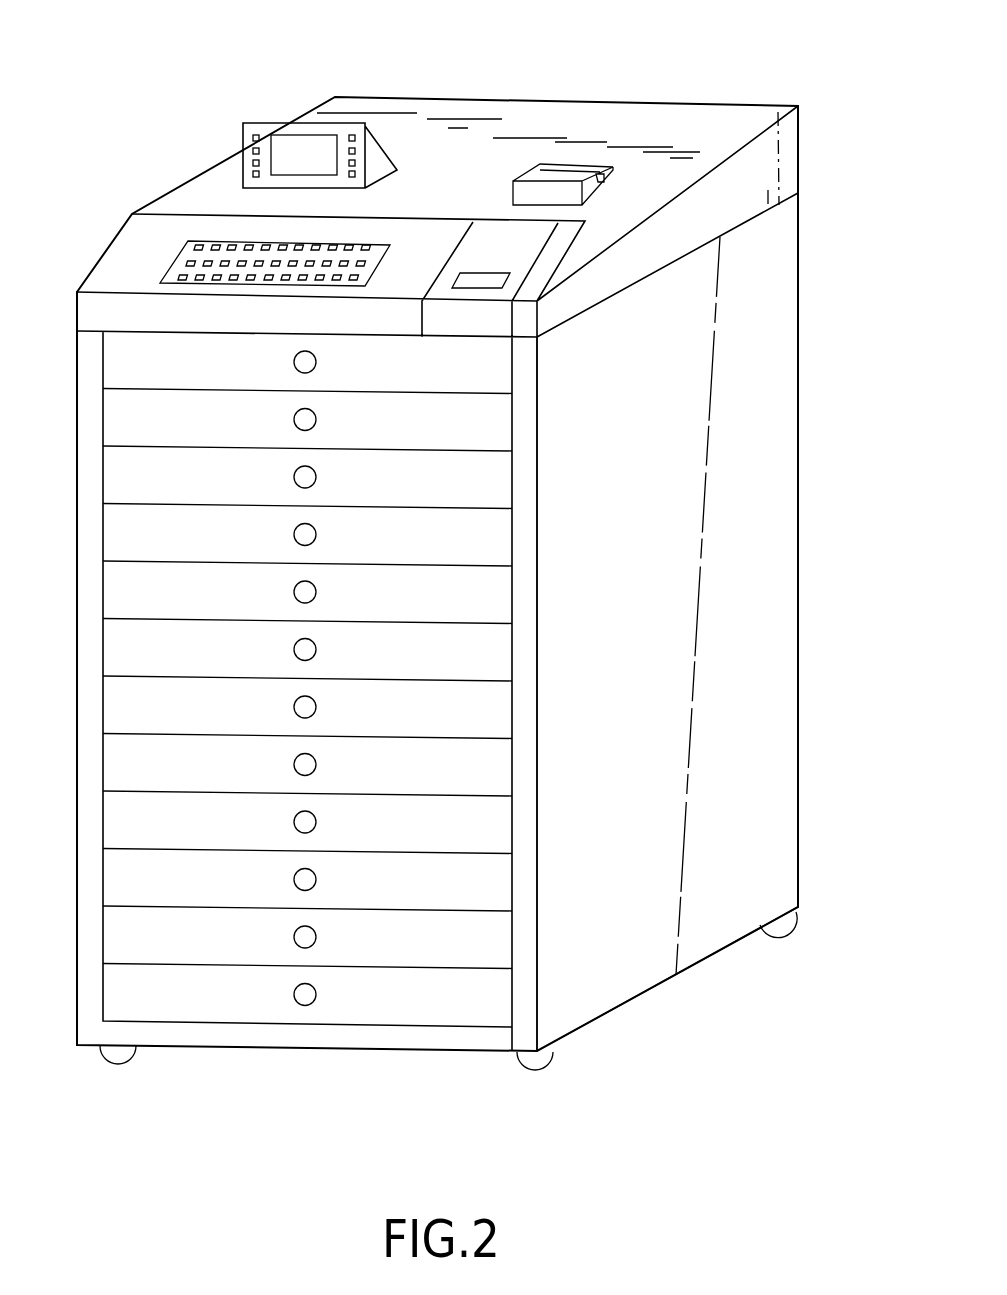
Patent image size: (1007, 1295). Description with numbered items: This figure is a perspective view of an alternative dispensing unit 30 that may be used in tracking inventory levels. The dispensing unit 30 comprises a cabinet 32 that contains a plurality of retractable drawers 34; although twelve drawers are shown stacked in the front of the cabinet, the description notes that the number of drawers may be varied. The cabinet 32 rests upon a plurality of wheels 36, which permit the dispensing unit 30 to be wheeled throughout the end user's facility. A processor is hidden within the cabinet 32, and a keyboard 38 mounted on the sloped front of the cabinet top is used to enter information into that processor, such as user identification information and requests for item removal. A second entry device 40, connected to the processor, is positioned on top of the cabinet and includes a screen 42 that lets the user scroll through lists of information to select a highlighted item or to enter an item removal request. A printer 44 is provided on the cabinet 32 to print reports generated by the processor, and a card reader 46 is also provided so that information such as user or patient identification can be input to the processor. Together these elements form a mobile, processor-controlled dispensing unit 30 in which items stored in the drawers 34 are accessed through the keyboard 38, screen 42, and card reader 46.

The dispensing unit 30 is at (687, 59).
The cabinet 32 is at (788, 332).
The retractable drawers 34 is at (495, 425).
The wheels 36 is at (128, 1058).
The keyboard 38 is at (380, 243).
The control panel / display unit 40 is at (358, 132).
The screen 42 is at (285, 150).
The printer 44 is at (486, 280).
The card reader 46 is at (610, 180).